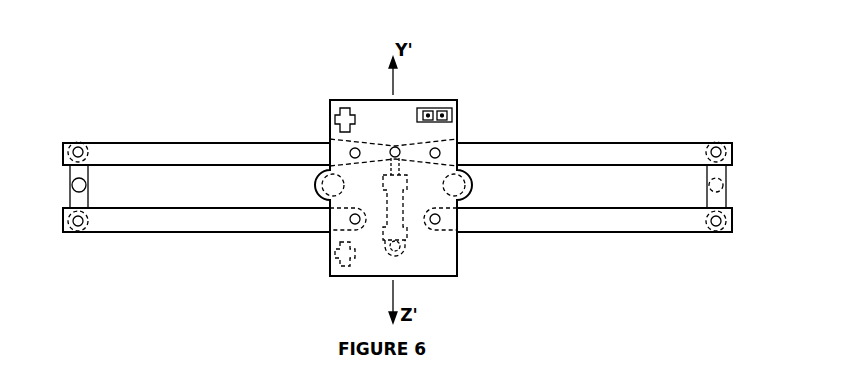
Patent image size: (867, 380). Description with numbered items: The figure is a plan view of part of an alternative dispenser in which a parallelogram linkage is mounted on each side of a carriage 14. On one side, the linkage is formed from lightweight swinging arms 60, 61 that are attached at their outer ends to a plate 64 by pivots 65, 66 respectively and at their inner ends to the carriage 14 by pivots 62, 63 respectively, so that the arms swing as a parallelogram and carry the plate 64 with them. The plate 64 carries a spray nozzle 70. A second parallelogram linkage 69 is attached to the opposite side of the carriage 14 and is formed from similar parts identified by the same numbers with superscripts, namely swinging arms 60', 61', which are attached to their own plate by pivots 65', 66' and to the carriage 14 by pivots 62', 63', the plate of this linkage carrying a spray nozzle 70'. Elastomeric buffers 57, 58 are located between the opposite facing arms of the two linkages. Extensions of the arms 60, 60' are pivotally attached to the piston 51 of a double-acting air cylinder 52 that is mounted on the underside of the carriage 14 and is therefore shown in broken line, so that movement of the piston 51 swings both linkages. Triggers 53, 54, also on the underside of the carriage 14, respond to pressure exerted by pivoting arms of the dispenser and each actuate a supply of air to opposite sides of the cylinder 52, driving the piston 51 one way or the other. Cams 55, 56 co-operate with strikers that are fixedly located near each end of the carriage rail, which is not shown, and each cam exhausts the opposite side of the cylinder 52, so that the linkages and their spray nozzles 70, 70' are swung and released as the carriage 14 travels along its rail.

The carriage 14 is at (449, 132).
The piston 51 is at (393, 148).
The double-acting air cylinder 52 is at (397, 205).
The trigger 53 is at (330, 276).
The trigger 54 is at (343, 115).
The cam 55 is at (427, 110).
The cam 56 is at (446, 110).
The elastomeric buffer 57 is at (322, 185).
The elastomeric buffer 58 is at (466, 185).
The swinging arm 60 is at (594, 129).
The swinging arm 60' is at (196, 128).
The swinging arm 61 is at (594, 250).
The swinging arm 61' is at (196, 250).
The pivot 62 is at (476, 125).
The pivot 62' is at (323, 125).
The pivot 63 is at (473, 250).
The pivot 63' is at (310, 250).
The plate 64 is at (724, 200).
The pivot 65 is at (720, 127).
The pivot 65' is at (75, 127).
The pivot 66 is at (706, 252).
The pivot 66' is at (88, 252).
The second parallelogram linkage 69 is at (188, 142).
The spray nozzle 70 is at (685, 185).
The spray nozzle 70' is at (112, 186).